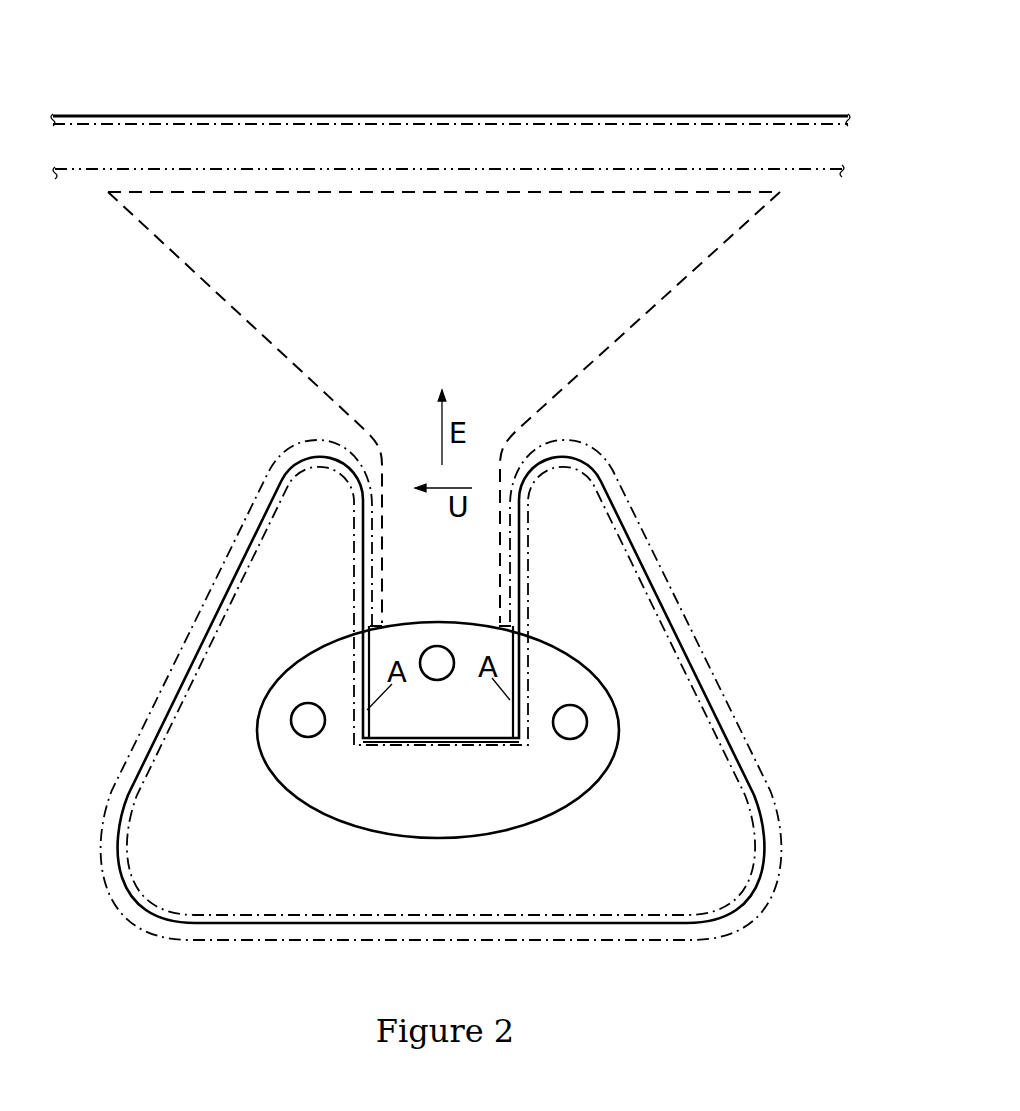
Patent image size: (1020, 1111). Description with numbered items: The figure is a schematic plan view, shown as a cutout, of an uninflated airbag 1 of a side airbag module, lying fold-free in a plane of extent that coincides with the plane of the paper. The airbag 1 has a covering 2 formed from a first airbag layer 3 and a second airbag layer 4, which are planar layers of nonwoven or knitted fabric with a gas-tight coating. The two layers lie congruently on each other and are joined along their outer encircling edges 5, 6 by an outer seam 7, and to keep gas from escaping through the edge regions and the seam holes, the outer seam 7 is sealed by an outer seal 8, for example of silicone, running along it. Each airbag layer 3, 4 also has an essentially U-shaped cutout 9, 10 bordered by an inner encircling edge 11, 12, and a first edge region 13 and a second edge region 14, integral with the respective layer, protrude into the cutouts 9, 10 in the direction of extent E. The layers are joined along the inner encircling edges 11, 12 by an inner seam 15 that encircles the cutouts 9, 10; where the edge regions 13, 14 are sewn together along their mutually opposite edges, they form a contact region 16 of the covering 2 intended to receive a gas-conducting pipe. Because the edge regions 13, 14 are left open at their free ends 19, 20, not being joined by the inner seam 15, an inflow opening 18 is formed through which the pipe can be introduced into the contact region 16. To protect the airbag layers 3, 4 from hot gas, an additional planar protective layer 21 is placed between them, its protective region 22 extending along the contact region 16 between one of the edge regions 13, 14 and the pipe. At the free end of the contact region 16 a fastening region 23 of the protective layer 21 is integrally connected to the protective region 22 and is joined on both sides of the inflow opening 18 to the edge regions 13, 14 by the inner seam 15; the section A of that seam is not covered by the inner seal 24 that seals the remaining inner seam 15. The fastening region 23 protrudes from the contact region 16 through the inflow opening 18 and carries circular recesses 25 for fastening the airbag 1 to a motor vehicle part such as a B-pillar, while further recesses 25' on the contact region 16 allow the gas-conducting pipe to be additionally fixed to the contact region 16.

The airbag 1 is at (504, 27).
The covering 2 is at (665, 142).
The first airbag layer 3 is at (260, 110).
The second airbag layer 4 is at (295, 125).
The outer encircling edge 5 is at (380, 112).
The outer encircling edge 6 is at (430, 130).
The outer seam 7 is at (822, 175).
The outer seal 8 is at (707, 168).
The cutout 9 is at (596, 870).
The cutout 10 is at (680, 870).
The inner encircling edge 11 is at (178, 693).
The inner encircling edge 12 is at (148, 762).
The first edge region 13 is at (487, 573).
The second edge region 14 is at (532, 589).
The inner seam 15 is at (687, 630).
The contact region 16 is at (432, 555).
The inflow opening 18 is at (475, 747).
The free end 19 is at (424, 737).
The free end 20 is at (395, 747).
The protective layer 21 is at (657, 318).
The protective region 22 is at (325, 298).
The fastening region 23 is at (348, 788).
The inner seal 24 is at (727, 718).
The recesses 25 is at (442, 752).
The recesses 25' is at (437, 627).